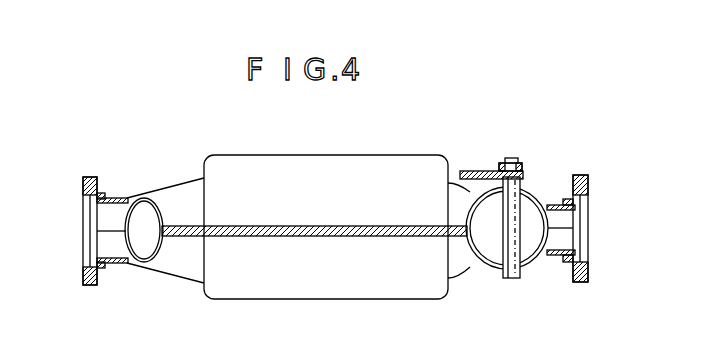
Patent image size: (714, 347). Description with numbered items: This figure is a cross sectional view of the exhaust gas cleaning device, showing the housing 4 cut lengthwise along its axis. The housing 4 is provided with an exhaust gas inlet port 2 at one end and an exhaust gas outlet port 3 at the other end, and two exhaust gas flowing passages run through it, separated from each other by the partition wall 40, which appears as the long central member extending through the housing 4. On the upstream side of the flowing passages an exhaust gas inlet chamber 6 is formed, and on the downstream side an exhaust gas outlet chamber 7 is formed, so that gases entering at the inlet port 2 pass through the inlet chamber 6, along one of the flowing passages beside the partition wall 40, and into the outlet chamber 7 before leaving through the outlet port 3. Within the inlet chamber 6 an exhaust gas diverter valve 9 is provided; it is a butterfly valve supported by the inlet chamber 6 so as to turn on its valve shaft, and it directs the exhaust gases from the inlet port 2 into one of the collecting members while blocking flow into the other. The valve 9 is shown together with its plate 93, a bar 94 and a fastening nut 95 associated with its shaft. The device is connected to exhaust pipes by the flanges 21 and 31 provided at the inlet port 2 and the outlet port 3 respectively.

The exhaust gas inlet port 2 is at (562, 218).
The exhaust gas outlet port 3 is at (113, 222).
The housing 4 is at (383, 155).
The exhaust gas inlet chamber 6 is at (560, 240).
The exhaust gas outlet chamber 7 is at (122, 243).
The exhaust gas diverter valve 9 is at (492, 247).
The flange 21 is at (578, 175).
The flange 31 is at (92, 177).
The partition wall 40 is at (302, 226).
The valve plate 93 is at (512, 279).
The mounting bar 94 is at (474, 171).
The nut 95 is at (521, 171).